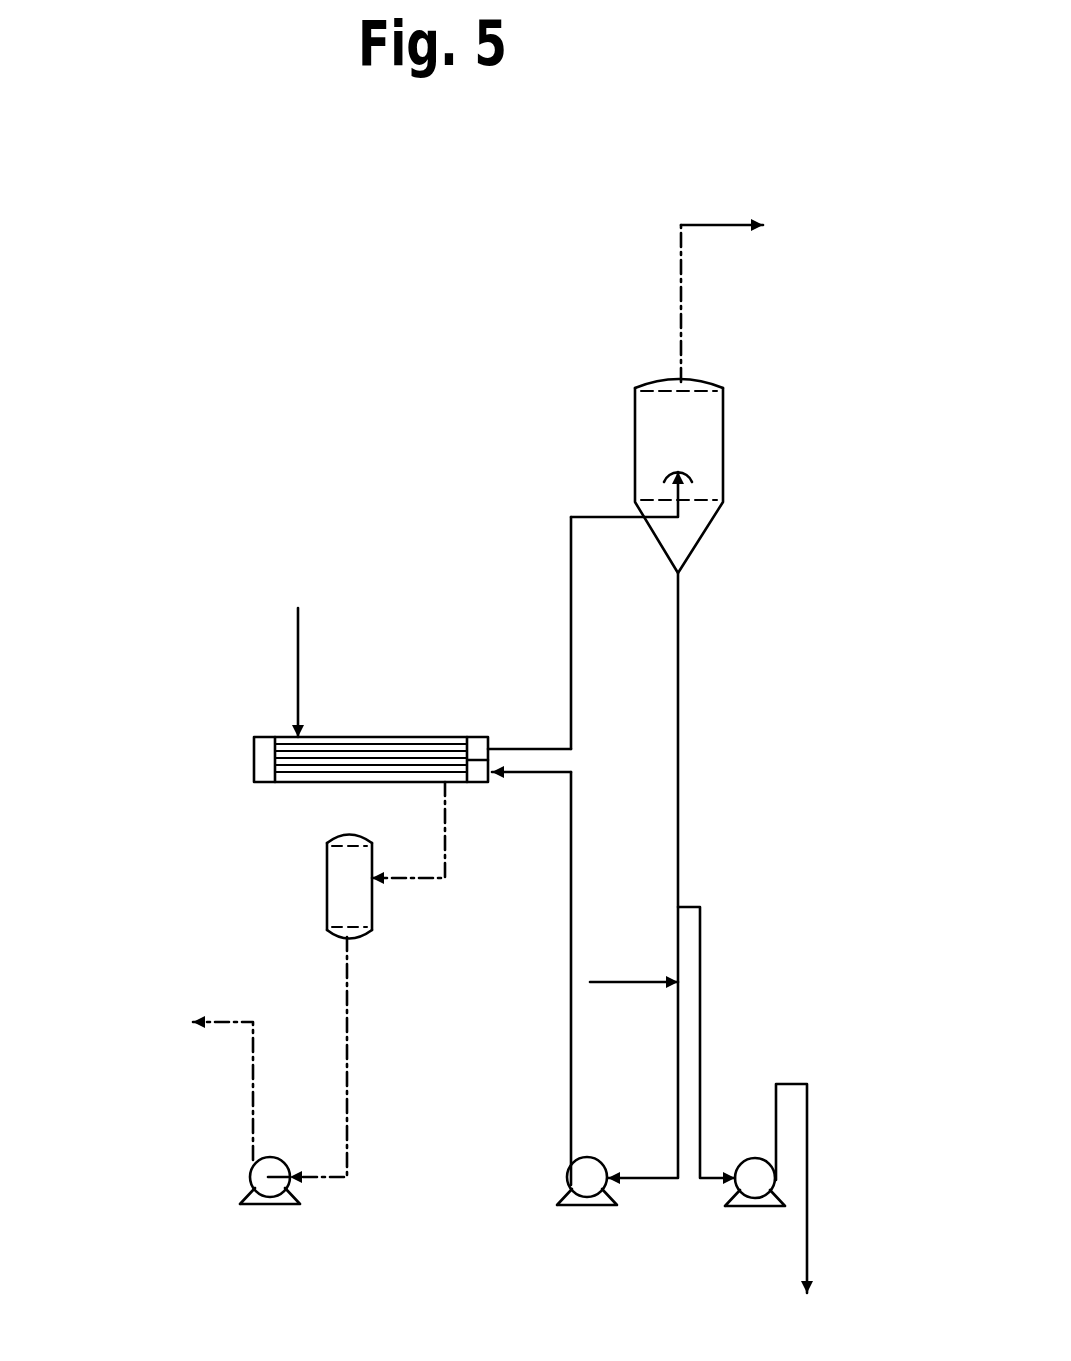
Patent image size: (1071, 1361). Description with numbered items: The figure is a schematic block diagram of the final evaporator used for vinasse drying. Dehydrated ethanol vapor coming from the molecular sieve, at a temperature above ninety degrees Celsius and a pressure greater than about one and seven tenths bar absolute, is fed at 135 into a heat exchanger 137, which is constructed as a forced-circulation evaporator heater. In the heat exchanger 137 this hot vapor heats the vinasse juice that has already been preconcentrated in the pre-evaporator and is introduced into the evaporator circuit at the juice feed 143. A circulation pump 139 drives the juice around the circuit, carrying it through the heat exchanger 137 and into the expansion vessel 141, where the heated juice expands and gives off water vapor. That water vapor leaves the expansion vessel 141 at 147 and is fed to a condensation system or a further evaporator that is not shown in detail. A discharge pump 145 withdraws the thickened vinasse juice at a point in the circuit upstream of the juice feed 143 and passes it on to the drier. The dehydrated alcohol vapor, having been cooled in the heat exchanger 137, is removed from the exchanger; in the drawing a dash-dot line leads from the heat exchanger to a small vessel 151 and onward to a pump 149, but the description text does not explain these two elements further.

The ethanol vapor feed 135 is at (298, 640).
The heat exchanger 137 is at (427, 737).
The circulation pump 139 is at (580, 1205).
The expansion vessel 141 is at (723, 425).
The juice feed 143 is at (612, 988).
The discharge pump 145 is at (753, 1205).
The water vapor outlet 147 is at (722, 222).
The condensate pump 149 is at (283, 1198).
The collecting vessel 151 is at (327, 888).